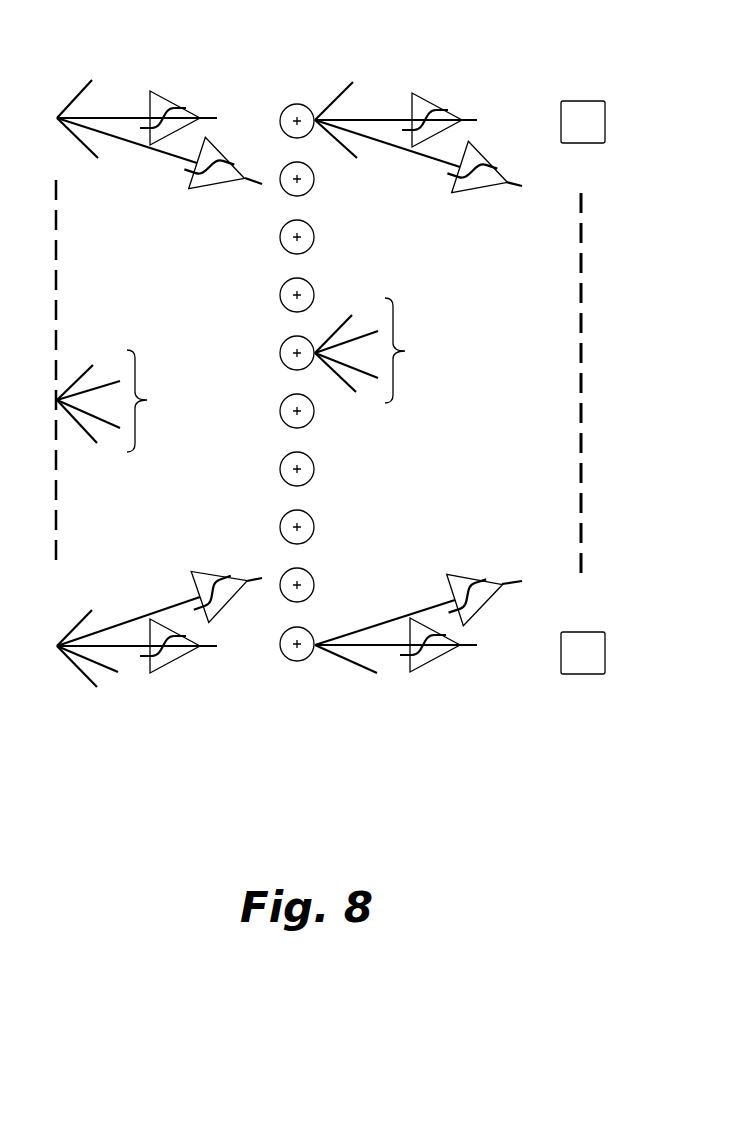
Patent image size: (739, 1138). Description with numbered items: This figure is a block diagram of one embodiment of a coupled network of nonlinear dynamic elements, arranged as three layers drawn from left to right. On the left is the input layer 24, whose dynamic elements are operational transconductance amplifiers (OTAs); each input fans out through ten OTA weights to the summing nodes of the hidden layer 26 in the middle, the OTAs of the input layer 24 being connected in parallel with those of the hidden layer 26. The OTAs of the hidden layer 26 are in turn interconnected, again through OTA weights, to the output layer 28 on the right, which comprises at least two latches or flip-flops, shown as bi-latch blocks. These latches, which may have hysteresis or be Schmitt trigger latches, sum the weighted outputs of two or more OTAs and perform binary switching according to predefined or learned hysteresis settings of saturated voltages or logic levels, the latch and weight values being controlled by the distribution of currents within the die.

The input layer 24 is at (92, 68).
The hidden layer 26 is at (329, 688).
The output layer 28 is at (612, 700).